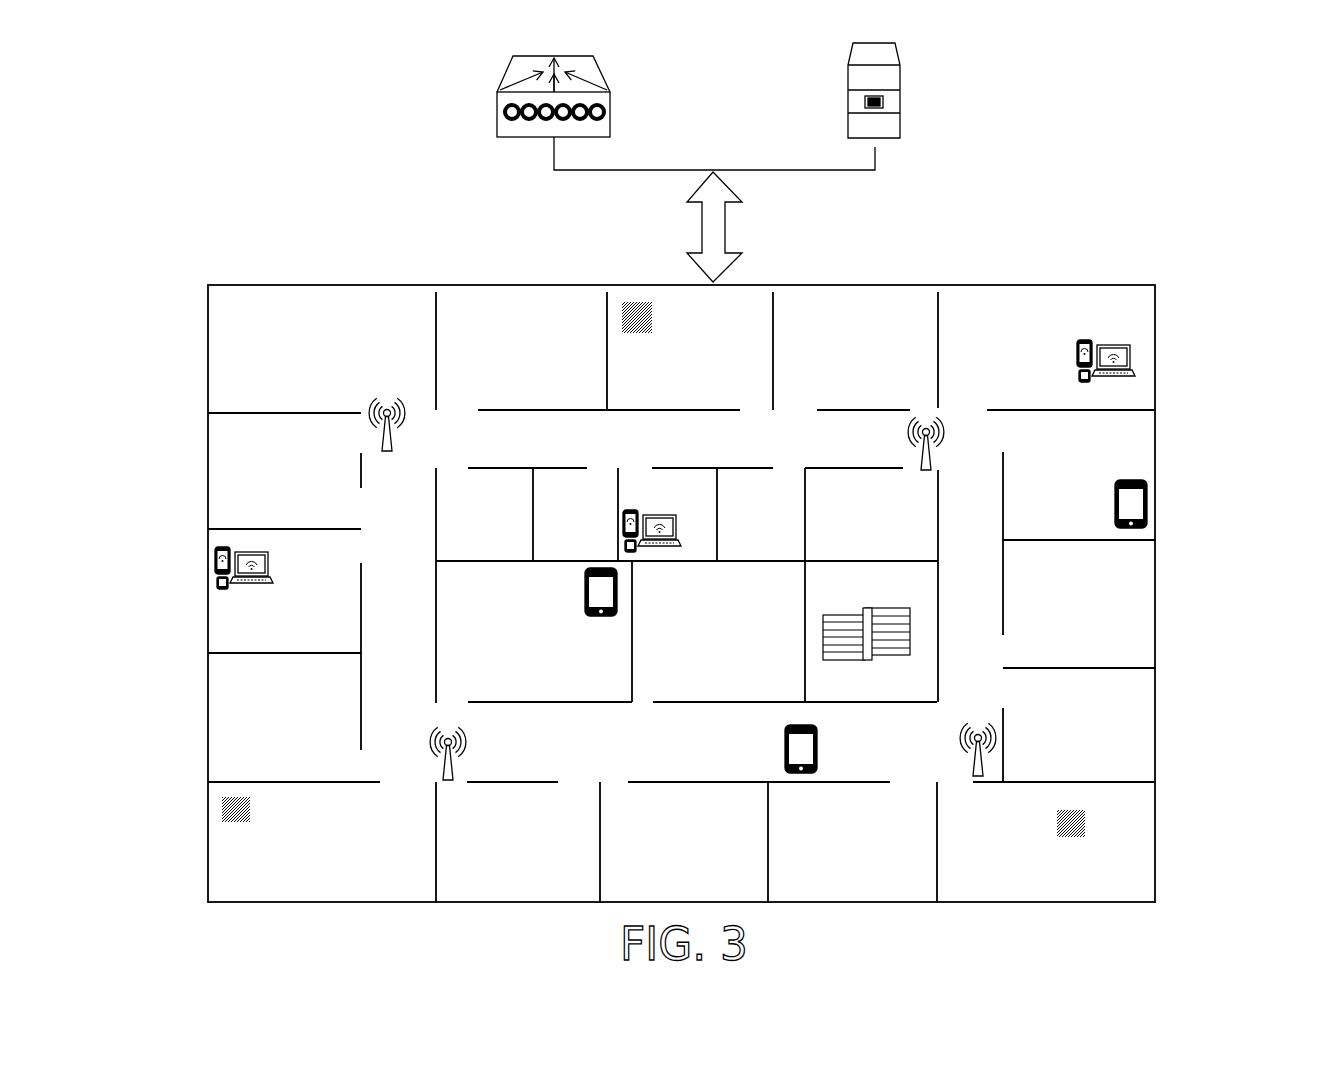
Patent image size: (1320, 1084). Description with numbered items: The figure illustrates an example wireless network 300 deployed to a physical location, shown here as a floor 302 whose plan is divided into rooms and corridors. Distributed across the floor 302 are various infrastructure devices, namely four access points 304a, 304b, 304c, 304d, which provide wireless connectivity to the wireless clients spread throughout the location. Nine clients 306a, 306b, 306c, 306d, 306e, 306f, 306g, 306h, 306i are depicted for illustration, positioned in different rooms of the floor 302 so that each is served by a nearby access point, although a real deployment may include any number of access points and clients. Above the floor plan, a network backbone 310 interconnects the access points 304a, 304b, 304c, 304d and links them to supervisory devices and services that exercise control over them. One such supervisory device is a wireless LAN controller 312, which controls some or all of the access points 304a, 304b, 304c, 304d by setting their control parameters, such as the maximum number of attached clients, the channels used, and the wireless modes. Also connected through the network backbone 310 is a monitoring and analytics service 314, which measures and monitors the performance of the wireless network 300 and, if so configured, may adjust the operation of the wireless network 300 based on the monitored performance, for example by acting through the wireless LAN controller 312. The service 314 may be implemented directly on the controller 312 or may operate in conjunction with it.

The wireless network 300 is at (1217, 115).
The floor 302 is at (217, 912).
The access point 304a is at (359, 395).
The access point 304b is at (947, 447).
The access point 304c is at (420, 732).
The access point 304d is at (973, 718).
The wireless client 306a is at (822, 750).
The wireless client 306b is at (597, 627).
The wireless client 306c is at (1100, 493).
The wireless client 306d is at (653, 348).
The wireless client 306e is at (248, 835).
The wireless client 306f is at (1063, 848).
The wireless client 306g is at (243, 598).
The wireless client 306h is at (692, 537).
The wireless client 306i is at (1067, 359).
The network backbone 310 is at (688, 228).
The wireless LAN controller (WLC) 312 is at (483, 90).
The monitoring and analytics service 314 is at (892, 148).